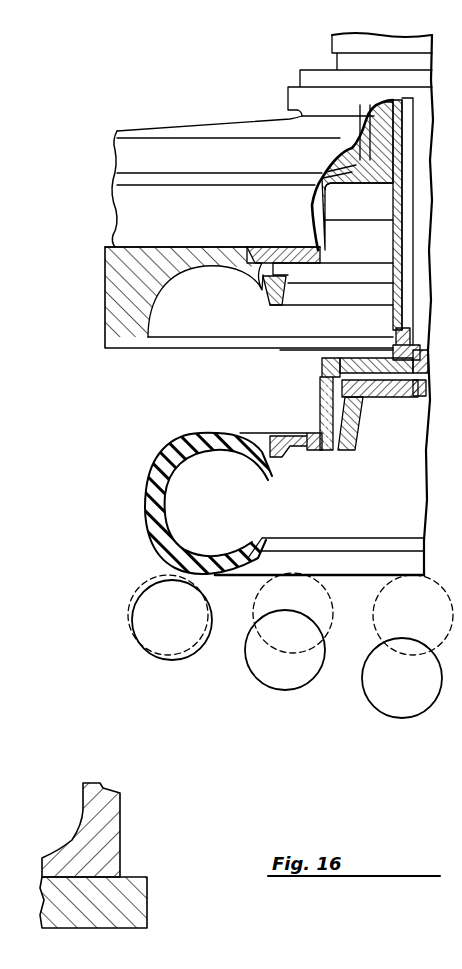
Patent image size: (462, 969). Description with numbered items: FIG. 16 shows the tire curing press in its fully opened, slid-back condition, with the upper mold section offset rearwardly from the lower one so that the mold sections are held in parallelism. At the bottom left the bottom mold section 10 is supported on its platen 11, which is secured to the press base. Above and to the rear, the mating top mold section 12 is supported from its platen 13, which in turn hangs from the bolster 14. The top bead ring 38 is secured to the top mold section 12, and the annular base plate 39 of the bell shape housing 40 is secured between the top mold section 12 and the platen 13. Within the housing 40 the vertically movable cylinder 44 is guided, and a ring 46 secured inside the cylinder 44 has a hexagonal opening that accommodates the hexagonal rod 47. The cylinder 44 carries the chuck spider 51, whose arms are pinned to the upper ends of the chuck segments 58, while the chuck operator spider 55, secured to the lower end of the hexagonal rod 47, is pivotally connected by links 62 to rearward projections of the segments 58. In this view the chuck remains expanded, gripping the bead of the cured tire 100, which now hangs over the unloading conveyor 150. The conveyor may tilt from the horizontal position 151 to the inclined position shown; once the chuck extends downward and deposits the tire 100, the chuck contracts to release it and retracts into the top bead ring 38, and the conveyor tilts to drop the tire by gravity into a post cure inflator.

The bottom mold section 10 is at (118, 842).
The platen 11 is at (147, 890).
The top mold section 12 is at (105, 303).
The platen 13 is at (114, 206).
The bolster 14 is at (190, 129).
The top bead ring 38 is at (263, 302).
The annular base plate 39 is at (264, 246).
The bell shape housing 40 is at (316, 204).
The cylinder 44 is at (392, 195).
The ring 46 is at (410, 330).
The hexagonal rod 47 is at (425, 222).
The chuck spider 51 is at (357, 358).
The chuck operator spider 55 is at (401, 398).
The chuck segments 58 is at (311, 397).
The links 62 is at (365, 424).
The tire 100 is at (144, 494).
The unloading conveyor 150 is at (381, 726).
The horizontal position 151 is at (378, 598).